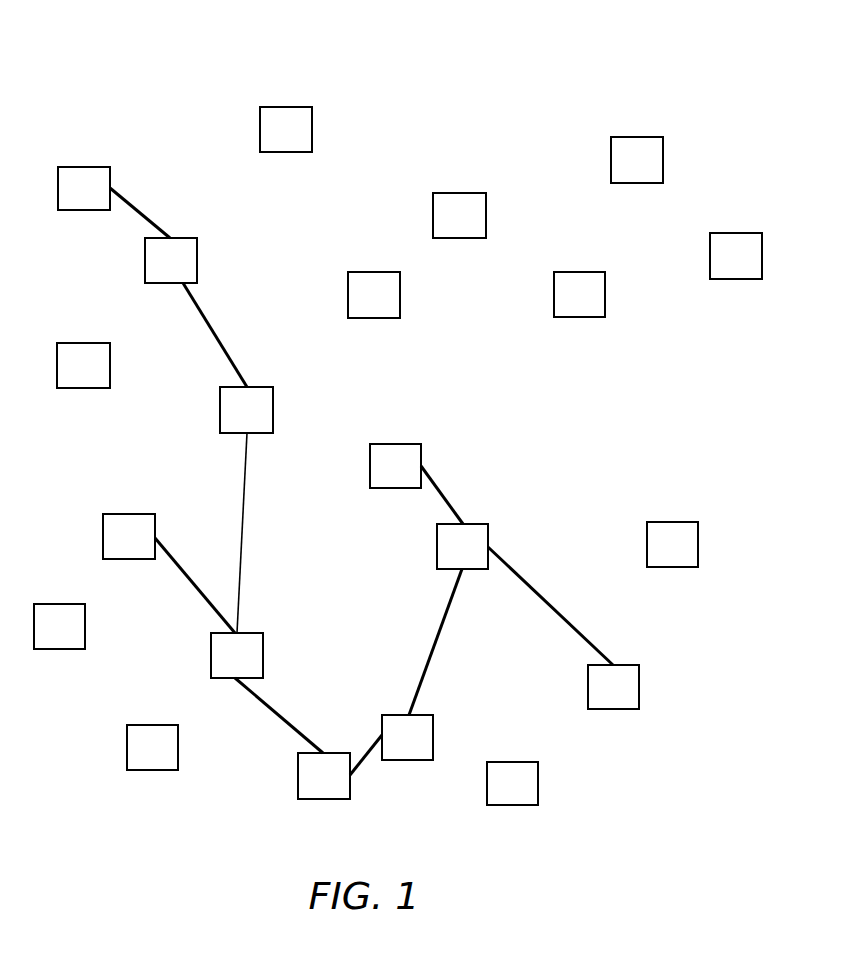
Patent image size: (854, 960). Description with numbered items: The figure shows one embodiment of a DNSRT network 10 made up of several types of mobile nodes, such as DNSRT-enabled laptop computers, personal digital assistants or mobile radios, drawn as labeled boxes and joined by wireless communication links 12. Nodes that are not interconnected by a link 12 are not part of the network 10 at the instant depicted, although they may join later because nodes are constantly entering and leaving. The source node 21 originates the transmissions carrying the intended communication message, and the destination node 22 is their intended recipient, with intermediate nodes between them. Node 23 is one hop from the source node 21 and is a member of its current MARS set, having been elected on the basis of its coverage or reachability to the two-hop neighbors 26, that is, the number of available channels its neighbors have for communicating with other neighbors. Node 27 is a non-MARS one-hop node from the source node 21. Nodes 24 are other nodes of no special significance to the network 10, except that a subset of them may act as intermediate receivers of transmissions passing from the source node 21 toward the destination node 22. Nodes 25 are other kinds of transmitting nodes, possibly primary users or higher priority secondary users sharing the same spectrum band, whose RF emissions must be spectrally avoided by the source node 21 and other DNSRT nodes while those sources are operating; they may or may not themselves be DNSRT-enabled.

The DNSRT network 10 is at (420, 88).
The wireless communication link 12 is at (143, 200).
The source node 21 is at (391, 745).
The destination node 22 is at (84, 188).
The elected MARS node 23 is at (324, 776).
The other node 24 is at (398, 378).
The RF source node 25 is at (377, 538).
The two-hop neighbor node 26 is at (425, 598).
The non-MARS one-hop node 27 is at (448, 619).